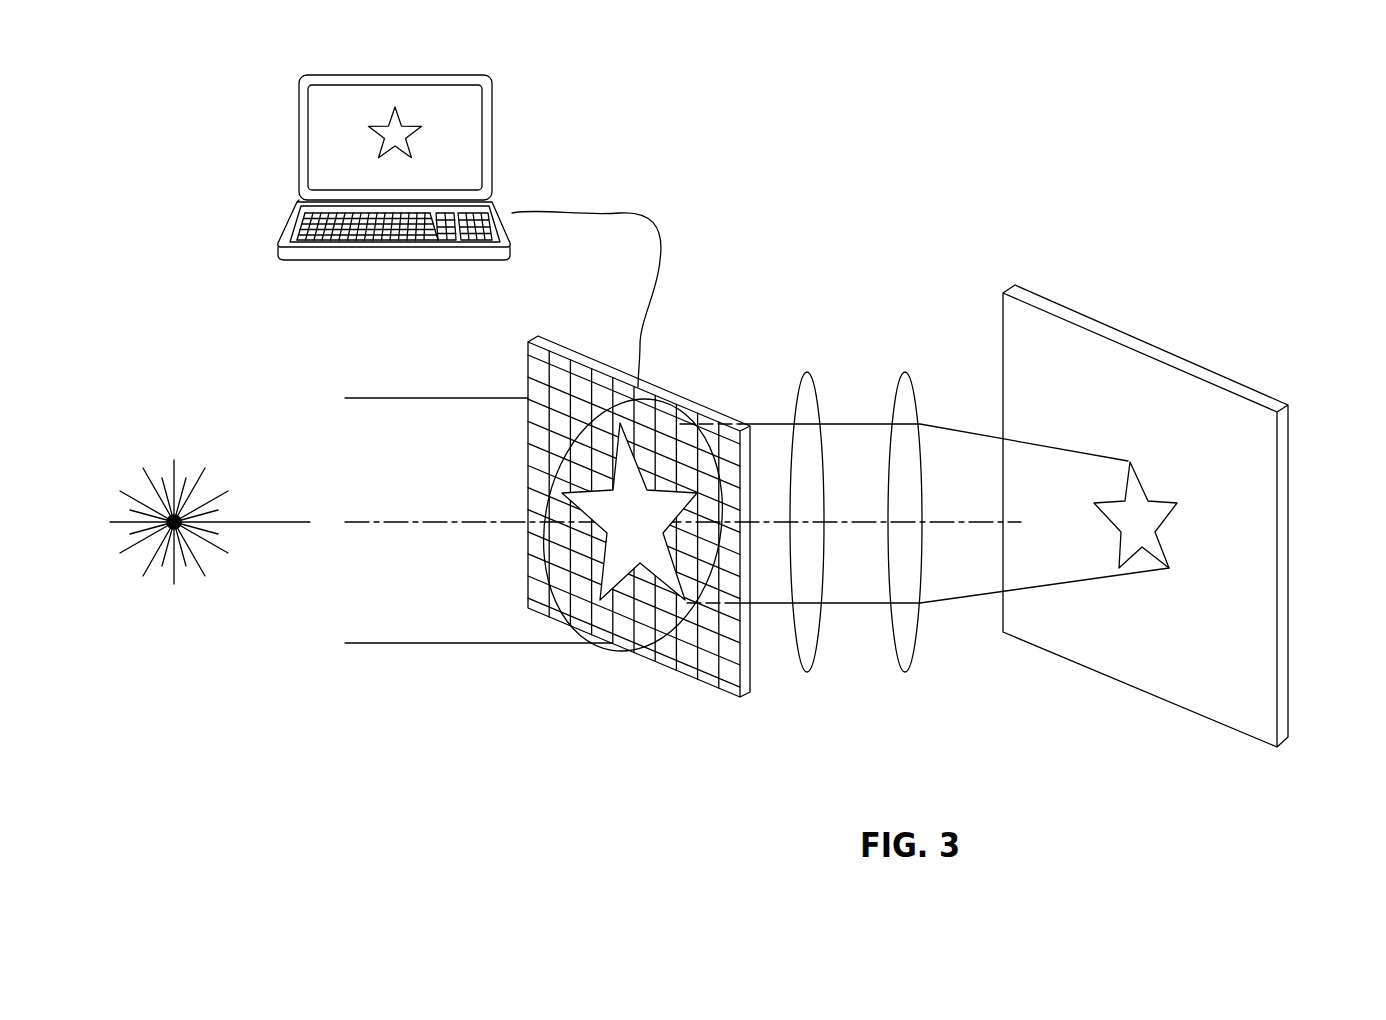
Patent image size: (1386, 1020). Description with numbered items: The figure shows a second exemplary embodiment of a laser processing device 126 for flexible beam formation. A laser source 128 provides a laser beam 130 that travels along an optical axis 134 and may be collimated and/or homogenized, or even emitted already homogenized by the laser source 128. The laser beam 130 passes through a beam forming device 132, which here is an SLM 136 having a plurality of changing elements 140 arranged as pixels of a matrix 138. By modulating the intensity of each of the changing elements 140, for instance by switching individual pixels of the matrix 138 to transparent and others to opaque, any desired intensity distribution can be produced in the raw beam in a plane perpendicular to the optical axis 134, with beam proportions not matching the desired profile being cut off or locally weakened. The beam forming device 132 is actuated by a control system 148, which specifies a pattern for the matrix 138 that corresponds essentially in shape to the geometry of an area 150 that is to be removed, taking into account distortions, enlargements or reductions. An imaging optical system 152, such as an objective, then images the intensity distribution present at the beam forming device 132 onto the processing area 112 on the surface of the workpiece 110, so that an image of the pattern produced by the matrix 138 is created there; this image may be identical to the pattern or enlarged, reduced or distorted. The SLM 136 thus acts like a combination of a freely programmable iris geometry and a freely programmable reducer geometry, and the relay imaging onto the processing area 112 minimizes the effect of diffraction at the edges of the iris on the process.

The workpiece 110 is at (1181, 516).
The processing area 112 is at (1152, 472).
The laser processing device 126 is at (1150, 162).
The laser source 128 is at (208, 442).
The laser beam 130 is at (480, 660).
The beam forming device 132 is at (599, 548).
The optical axis 134 is at (403, 523).
The SLM 136 is at (665, 668).
The matrix 138 is at (590, 618).
The changing elements 140 is at (540, 390).
The control system 148 is at (250, 163).
The area to be removed 150 is at (1144, 531).
The imaging optical system 152 is at (774, 349).